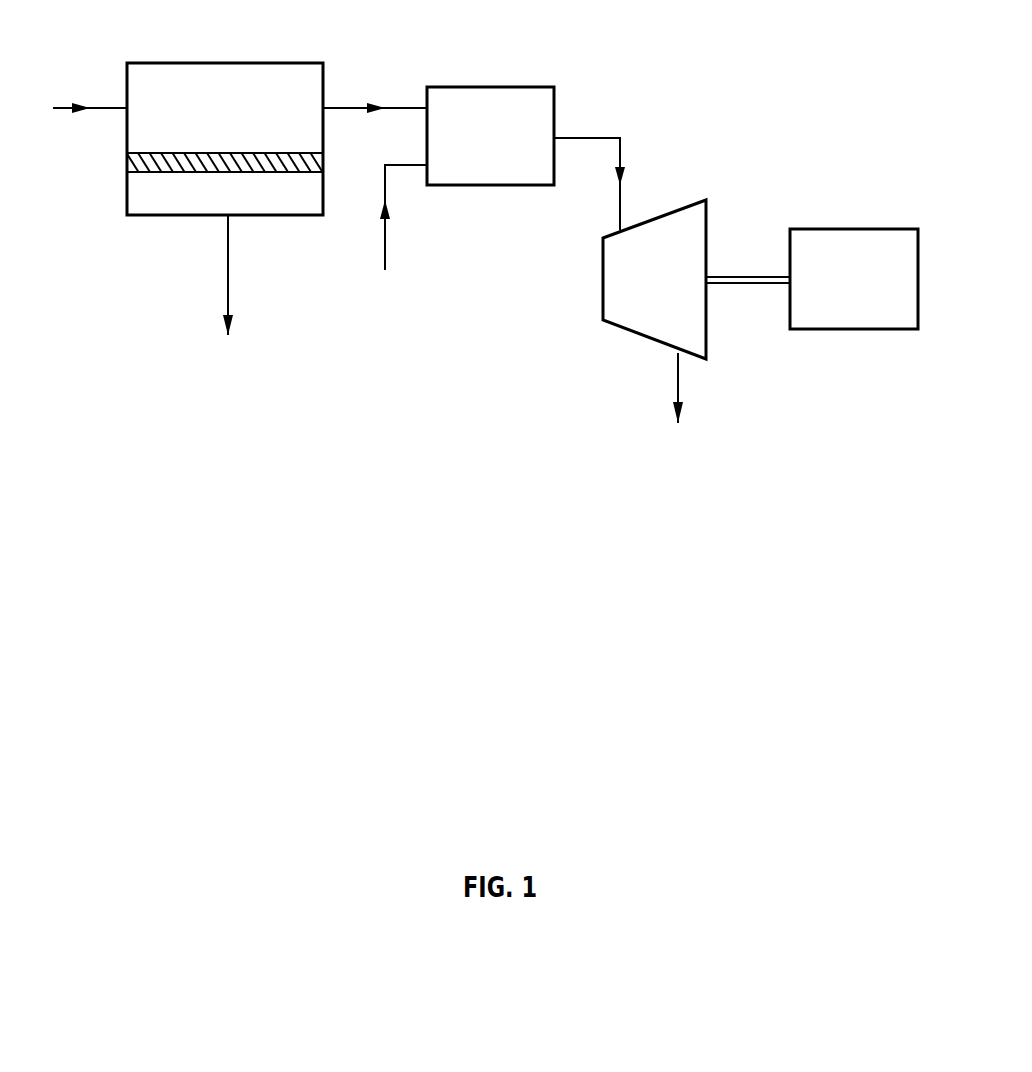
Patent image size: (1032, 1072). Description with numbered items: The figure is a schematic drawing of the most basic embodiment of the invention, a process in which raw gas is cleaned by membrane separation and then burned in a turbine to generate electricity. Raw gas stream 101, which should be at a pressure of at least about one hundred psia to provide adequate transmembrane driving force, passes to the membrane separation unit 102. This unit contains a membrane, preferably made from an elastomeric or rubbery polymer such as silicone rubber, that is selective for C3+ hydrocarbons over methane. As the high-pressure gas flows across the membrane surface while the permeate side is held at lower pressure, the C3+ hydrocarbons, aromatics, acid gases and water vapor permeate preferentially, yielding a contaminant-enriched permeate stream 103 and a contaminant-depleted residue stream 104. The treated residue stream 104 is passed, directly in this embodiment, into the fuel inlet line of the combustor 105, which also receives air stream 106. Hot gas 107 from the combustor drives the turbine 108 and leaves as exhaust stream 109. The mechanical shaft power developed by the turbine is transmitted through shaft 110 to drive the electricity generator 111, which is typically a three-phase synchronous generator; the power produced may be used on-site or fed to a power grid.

The raw gas stream 101 is at (90, 123).
The membrane separation unit 102 is at (273, 63).
The permeate stream 103 is at (228, 291).
The residue stream 104 is at (375, 124).
The combustor 105 is at (497, 87).
The air stream 106 is at (396, 236).
The hot gas 107 is at (612, 183).
The turbine 108 is at (622, 332).
The exhaust stream 109 is at (681, 405).
The shaft 110 is at (745, 284).
The electricity generator 111 is at (860, 229).